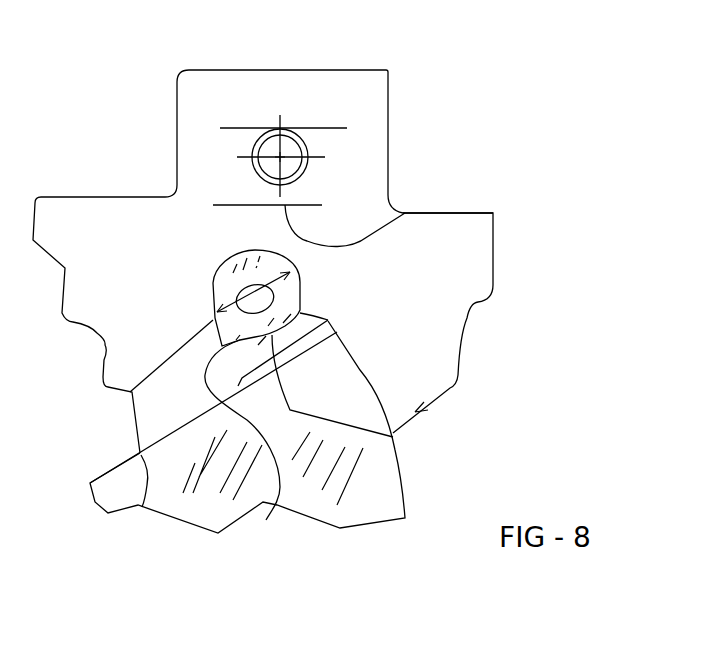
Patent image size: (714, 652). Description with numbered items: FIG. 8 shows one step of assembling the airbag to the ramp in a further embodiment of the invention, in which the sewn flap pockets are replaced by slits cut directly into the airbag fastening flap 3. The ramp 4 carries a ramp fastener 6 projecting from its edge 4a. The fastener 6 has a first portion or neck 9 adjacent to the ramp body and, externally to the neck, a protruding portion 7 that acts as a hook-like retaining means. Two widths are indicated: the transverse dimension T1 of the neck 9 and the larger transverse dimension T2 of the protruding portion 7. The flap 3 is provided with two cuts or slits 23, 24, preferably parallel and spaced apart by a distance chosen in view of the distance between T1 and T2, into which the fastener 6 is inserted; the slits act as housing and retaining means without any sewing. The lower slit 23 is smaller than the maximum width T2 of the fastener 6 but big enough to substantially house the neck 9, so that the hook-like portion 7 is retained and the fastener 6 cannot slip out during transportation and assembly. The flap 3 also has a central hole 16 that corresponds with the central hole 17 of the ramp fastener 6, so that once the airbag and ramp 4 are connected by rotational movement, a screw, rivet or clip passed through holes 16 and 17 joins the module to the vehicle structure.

The airbag fastening flap 3 is at (192, 105).
The slit 24 is at (306, 127).
The central hole 16 is at (304, 171).
The slit 23 is at (403, 212).
The protruding portion 7 is at (310, 265).
The transverse dimension of the second portion T2 is at (213, 284).
The central hole 17 is at (130, 392).
The first portion 9 is at (325, 303).
The transverse dimension of the first portion T1 is at (393, 437).
The ramp fastener 6 is at (275, 503).
The edge 4a is at (145, 508).
The ramp 4 is at (376, 488).